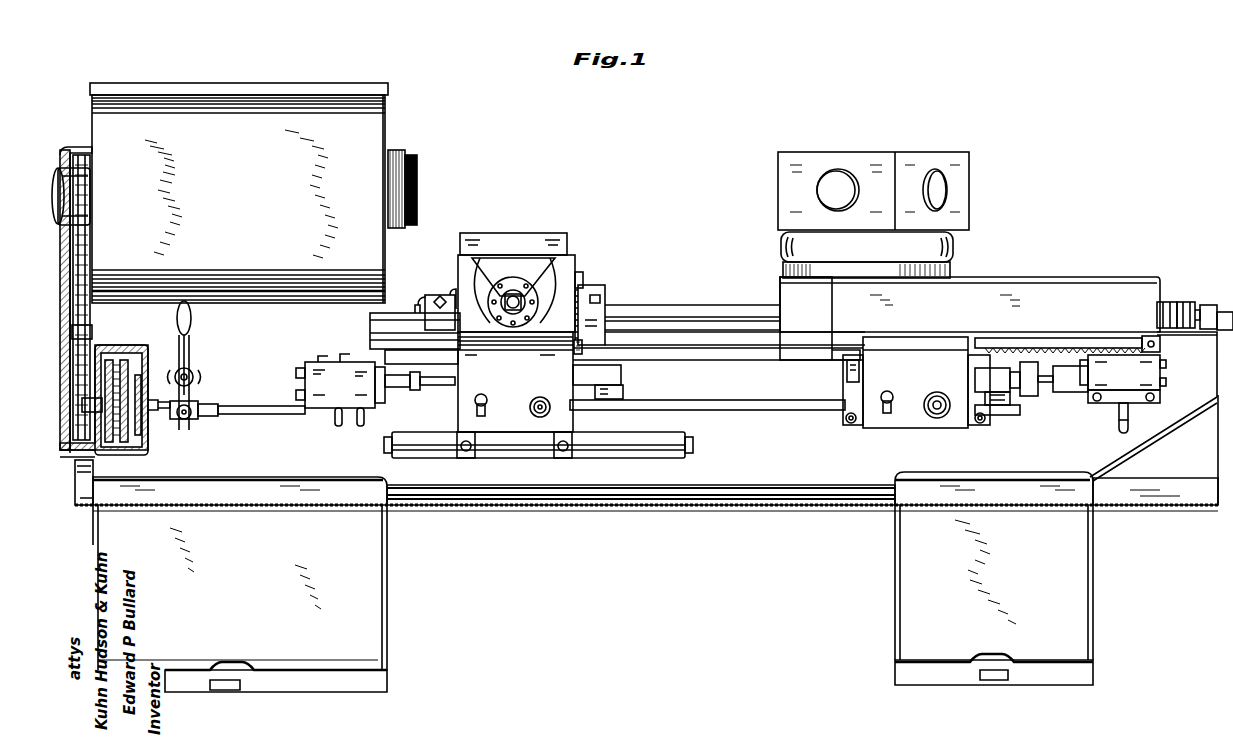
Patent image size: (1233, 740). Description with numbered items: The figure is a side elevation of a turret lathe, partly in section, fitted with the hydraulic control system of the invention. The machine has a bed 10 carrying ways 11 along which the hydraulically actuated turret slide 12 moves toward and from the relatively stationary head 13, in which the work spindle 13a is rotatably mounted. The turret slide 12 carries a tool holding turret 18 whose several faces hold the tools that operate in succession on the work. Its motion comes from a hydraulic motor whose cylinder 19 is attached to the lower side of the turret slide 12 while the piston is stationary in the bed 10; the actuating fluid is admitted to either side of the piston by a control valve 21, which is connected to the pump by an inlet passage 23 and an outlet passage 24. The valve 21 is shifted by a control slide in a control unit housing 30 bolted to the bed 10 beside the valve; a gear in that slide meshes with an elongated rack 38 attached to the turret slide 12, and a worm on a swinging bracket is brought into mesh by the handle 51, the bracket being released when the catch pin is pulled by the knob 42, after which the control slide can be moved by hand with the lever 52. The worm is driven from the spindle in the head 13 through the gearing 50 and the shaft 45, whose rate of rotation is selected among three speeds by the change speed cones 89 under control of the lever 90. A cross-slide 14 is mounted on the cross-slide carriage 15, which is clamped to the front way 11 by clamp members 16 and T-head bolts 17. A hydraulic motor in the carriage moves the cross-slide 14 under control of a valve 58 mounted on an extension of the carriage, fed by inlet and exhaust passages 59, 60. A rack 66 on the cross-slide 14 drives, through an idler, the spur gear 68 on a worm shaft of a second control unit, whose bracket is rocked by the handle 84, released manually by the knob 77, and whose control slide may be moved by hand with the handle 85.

The bed 10 is at (370, 520).
The ways 11 is at (672, 318).
The turret slide 12 is at (1010, 283).
The head 13 is at (375, 135).
The work spindle 13a is at (446, 174).
The cross-slide 14 is at (560, 265).
The cross-slide carriage 15 is at (515, 382).
The clamp members 16 is at (605, 300).
The T-head bolts 17 is at (466, 452).
The tool holding turret 18 is at (962, 165).
The cylinder 19 is at (1180, 302).
The control valve 21 is at (1123, 379).
The inlet passage 23 is at (1118, 408).
The outlet passage 24 is at (1120, 424).
The housing 30 is at (910, 424).
The rack 38 is at (1048, 345).
The knob 42 is at (940, 418).
The shaft 45 is at (738, 410).
The gearing 50 is at (88, 315).
The handle 51 is at (890, 392).
The lever 52 is at (1010, 398).
The valve 58 is at (375, 381).
The inlet passage 59 is at (336, 423).
The exhaust passage 60 is at (365, 423).
The rack 66 is at (582, 282).
The spur gear 68 is at (583, 348).
The knob 77 is at (543, 398).
The handle 84 is at (481, 394).
The handle 85 is at (632, 387).
The change speed cones 89 is at (130, 345).
The lever 90 is at (190, 322).